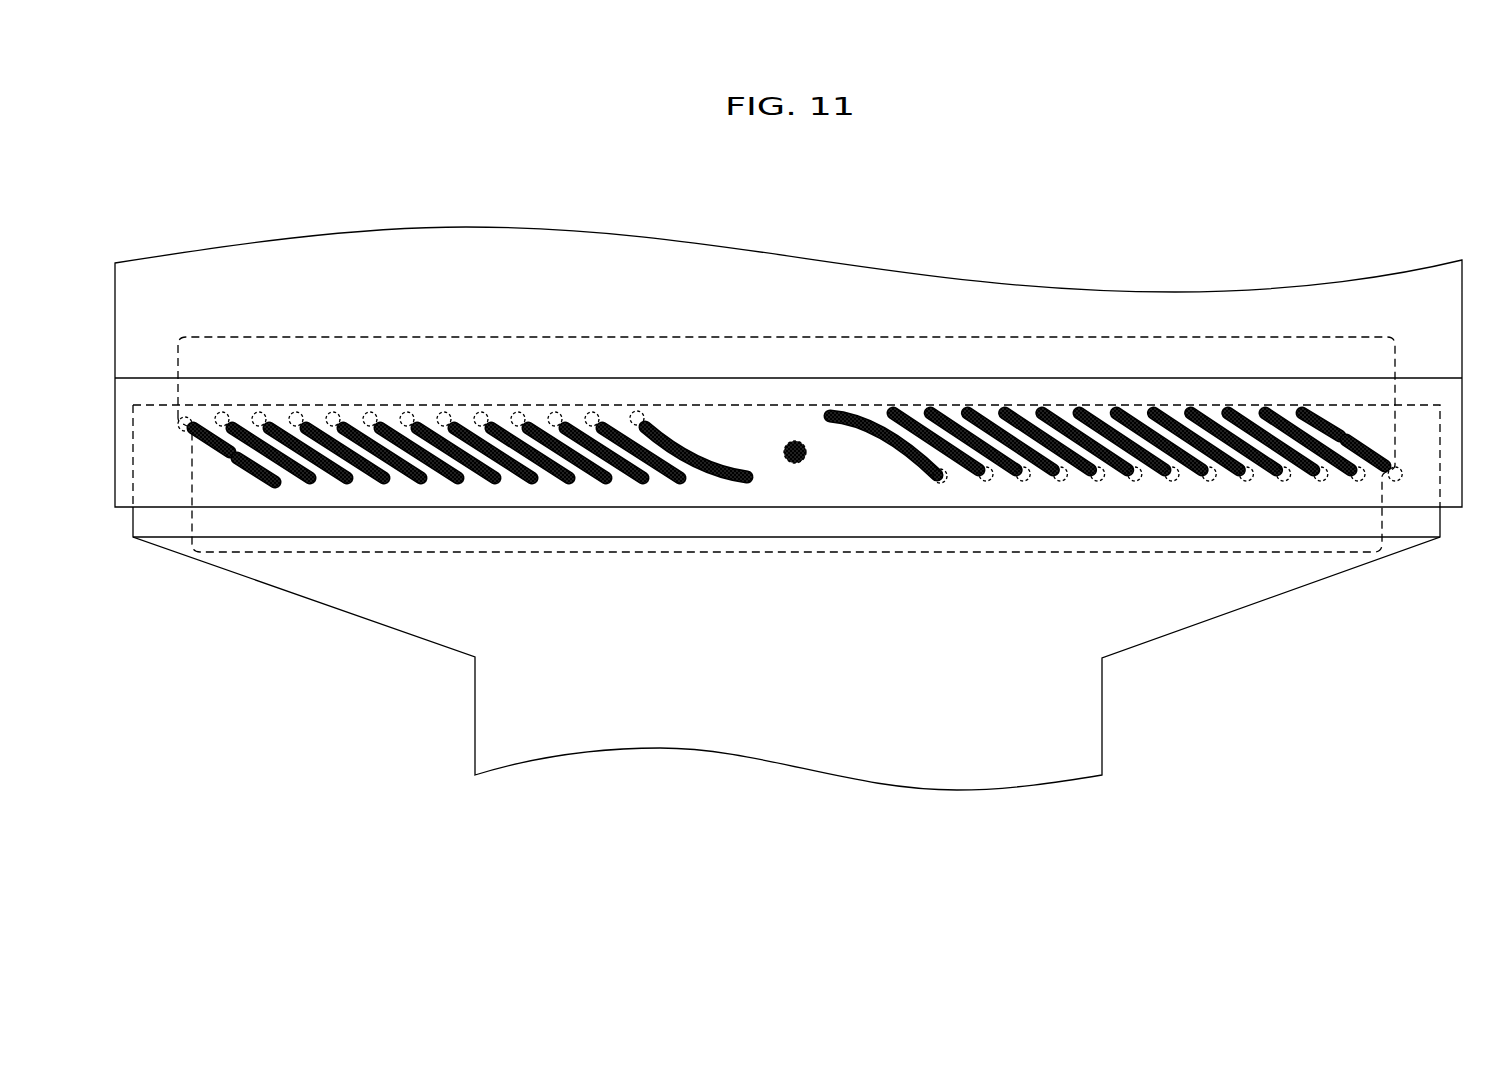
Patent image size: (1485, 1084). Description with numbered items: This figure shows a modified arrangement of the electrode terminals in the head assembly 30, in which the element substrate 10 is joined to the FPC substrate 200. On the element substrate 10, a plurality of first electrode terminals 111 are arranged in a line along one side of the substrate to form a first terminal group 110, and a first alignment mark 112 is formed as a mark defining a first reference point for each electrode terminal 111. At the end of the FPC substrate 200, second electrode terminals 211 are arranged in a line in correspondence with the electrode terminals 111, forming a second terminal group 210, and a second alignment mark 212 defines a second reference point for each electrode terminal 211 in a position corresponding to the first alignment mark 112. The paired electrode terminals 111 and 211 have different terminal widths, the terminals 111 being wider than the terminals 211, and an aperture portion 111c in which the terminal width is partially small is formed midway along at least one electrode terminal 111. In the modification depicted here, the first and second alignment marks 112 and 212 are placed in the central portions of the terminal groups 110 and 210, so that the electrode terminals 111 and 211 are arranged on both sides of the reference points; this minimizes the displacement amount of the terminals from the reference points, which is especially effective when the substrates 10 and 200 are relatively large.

The liquid ejecting head assembly 30 is at (197, 165).
The element substrate 10 is at (283, 215).
The FPC substrate 200 is at (377, 670).
The second terminal group 210 is at (794, 337).
The first terminal group 110 is at (806, 552).
The second electrode terminals 211 is at (183, 418).
The first electrode terminals 111 is at (252, 470).
The aperture portion 111c is at (236, 457).
The second alignment mark 212 is at (784, 443).
The first alignment mark 112 is at (802, 461).